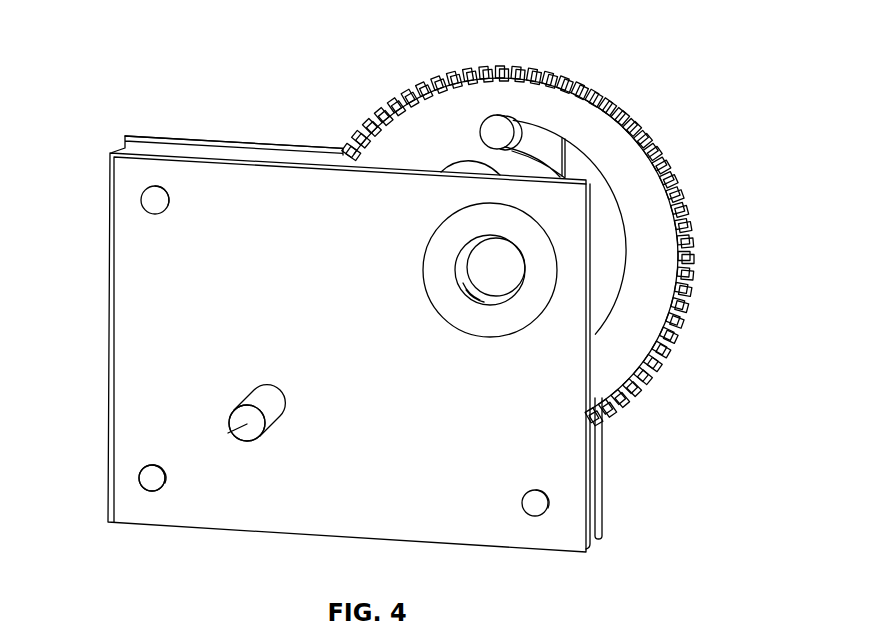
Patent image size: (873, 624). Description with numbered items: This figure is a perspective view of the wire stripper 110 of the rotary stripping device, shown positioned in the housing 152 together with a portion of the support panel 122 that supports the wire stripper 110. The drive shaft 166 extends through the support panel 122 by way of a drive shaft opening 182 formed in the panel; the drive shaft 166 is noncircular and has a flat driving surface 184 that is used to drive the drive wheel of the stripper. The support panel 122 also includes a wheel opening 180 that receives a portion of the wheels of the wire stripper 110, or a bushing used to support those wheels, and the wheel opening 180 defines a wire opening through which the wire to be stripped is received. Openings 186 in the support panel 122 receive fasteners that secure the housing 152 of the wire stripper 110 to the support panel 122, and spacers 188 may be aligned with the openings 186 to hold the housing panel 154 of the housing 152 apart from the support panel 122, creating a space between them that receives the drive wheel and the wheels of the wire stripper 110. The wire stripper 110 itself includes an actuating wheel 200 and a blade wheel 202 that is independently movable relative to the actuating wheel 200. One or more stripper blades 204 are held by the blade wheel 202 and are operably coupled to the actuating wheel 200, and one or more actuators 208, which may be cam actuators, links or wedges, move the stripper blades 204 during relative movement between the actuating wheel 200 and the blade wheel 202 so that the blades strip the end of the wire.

The wire stripper 110 is at (556, 223).
The support panel 122 is at (397, 522).
The housing 152 is at (134, 130).
The housing panel 154 is at (195, 140).
The drive shaft 166 is at (228, 433).
The wheel opening 180 is at (522, 345).
The drive shaft opening 182 is at (281, 431).
The driving surface 184 is at (247, 425).
The openings 186 is at (134, 489).
The spacers 188 is at (150, 482).
The actuating wheel 200 is at (640, 327).
The blade wheel 202 is at (693, 273).
The stripper blades 204 is at (552, 148).
The actuators 208 is at (489, 108).